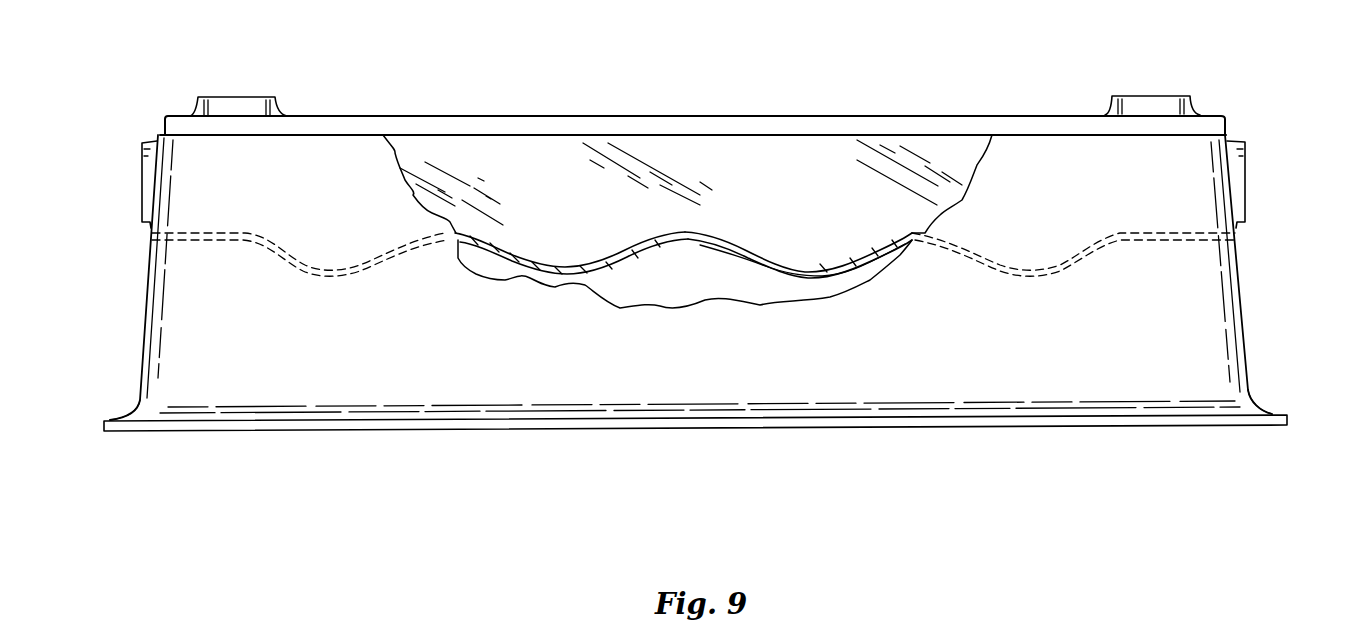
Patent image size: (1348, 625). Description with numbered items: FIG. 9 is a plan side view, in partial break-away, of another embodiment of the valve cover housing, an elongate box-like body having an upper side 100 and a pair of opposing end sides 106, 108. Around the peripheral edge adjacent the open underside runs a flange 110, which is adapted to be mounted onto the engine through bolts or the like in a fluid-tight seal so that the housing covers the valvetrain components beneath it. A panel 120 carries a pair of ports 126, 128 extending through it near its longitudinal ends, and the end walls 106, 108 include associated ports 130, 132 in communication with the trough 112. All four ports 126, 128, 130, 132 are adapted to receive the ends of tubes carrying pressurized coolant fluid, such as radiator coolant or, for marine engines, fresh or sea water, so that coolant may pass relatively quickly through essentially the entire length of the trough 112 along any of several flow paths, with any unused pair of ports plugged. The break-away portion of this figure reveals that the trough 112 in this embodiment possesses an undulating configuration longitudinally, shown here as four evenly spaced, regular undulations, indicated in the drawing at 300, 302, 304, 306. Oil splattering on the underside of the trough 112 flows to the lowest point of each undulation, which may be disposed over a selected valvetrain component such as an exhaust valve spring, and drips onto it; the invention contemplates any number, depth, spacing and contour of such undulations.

The upper side 100 is at (555, 115).
The end side 106 is at (146, 274).
The end side 108 is at (1242, 258).
The flange 110 is at (110, 419).
The trough 112 is at (687, 221).
The panel 120 is at (1058, 114).
The port 126 is at (230, 96).
The port 128 is at (1144, 95).
The port 130 is at (142, 192).
The port 132 is at (1247, 162).
The first seam portion 300 is at (325, 283).
The central band left portion 302 is at (566, 279).
The central band right portion 304 is at (808, 279).
The second seam portion 306 is at (1044, 283).